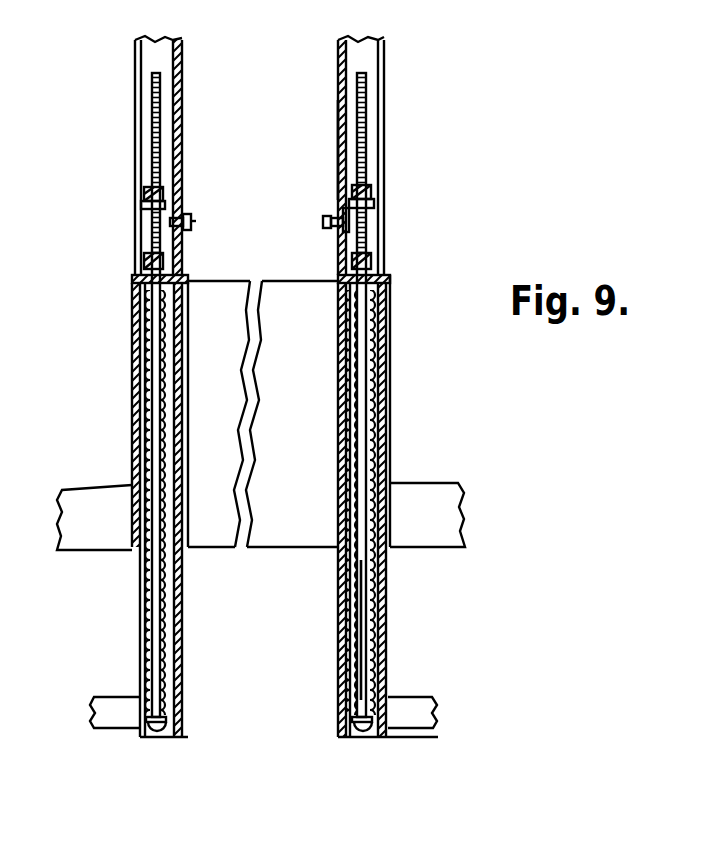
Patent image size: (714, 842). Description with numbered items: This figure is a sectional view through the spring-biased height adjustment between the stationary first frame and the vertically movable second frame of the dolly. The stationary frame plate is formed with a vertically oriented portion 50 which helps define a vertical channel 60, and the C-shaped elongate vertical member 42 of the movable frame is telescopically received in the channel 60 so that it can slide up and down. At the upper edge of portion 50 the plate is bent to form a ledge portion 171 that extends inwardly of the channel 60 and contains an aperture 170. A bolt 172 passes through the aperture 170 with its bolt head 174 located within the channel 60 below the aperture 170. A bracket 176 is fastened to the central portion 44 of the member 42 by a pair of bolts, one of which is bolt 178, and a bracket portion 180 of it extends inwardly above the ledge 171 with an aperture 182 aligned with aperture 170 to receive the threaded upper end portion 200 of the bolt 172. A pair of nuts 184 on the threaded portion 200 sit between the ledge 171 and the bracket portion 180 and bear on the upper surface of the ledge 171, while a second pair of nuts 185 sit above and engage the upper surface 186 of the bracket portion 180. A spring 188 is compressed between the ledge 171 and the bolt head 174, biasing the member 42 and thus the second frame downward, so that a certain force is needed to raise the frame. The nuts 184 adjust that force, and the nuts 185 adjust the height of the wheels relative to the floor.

The elongate vertical member 42 is at (337, 52).
The threaded upper end portion 200 is at (366, 83).
The upper surface 186 is at (186, 172).
The nuts 185 is at (338, 152).
The bracket 176 is at (338, 200).
The bolt 178 is at (325, 226).
The aperture 182 is at (372, 198).
The bracket portion 180 is at (374, 203).
The nuts 184 is at (371, 258).
The ledge portion 171 is at (390, 276).
The aperture 170 is at (352, 284).
The vertical channel 60 is at (410, 352).
The vertically oriented portion 50 is at (393, 425).
The bolt 172 is at (368, 460).
The spring 188 is at (368, 612).
The central portion 44 is at (340, 647).
The bolt head 174 is at (362, 737).